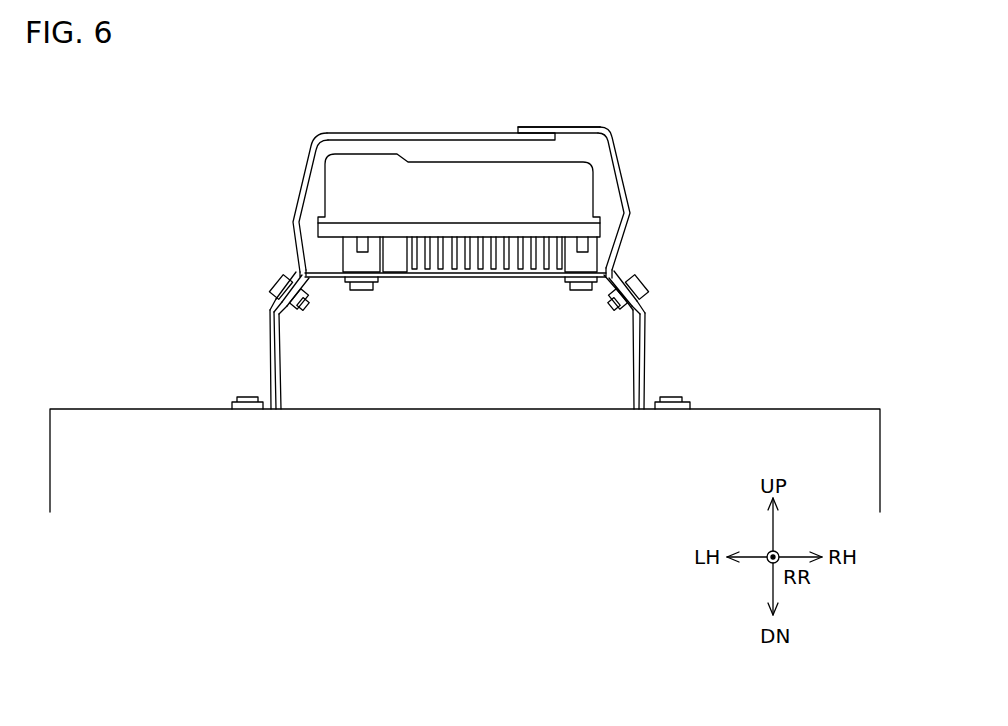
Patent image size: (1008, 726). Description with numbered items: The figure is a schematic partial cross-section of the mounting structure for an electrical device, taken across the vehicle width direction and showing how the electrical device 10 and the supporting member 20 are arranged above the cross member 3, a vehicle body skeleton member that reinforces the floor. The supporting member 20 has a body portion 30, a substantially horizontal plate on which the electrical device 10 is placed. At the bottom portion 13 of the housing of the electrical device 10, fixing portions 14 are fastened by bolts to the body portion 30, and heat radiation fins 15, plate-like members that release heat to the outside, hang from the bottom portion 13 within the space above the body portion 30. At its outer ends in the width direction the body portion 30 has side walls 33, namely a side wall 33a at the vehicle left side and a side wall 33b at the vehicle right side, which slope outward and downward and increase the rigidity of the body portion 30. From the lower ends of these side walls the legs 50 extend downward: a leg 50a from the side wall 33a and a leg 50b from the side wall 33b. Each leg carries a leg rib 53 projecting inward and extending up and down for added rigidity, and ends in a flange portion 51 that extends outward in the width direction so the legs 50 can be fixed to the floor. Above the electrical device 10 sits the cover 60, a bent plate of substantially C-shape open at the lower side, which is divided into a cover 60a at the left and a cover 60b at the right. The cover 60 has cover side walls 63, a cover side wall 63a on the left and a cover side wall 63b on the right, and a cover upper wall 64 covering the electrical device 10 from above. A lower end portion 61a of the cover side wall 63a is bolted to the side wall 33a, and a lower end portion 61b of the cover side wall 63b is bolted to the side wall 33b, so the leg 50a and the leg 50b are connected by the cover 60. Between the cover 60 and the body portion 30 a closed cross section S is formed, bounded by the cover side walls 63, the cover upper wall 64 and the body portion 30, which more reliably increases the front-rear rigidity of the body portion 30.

The cross member 3 is at (853, 435).
The electrical device 10 is at (477, 177).
The bottom portion 13 is at (598, 230).
The fixing portions 14 is at (352, 258).
The heat radiation fins 15 is at (470, 262).
The supporting member 20 is at (616, 84).
The body portion 30 is at (330, 278).
The side walls 33 is at (460, 290).
The side wall 33a is at (227, 286).
The side wall 33b is at (691, 291).
The legs 50 is at (461, 332).
The leg 50a is at (395, 359).
The leg 50b is at (650, 360).
The flange portion 51 is at (236, 404).
The leg rib 53 is at (457, 359).
The cover 60 is at (459, 180).
The cover 60a is at (313, 142).
The cover 60b is at (612, 135).
The lower end portion 61a is at (278, 312).
The lower end portion 61b is at (648, 283).
The cover side walls 63 is at (459, 224).
The cover side wall 63a is at (305, 168).
The cover side wall 63b is at (622, 160).
The cover upper wall 64 is at (409, 132).
The closed cross section S is at (530, 139).